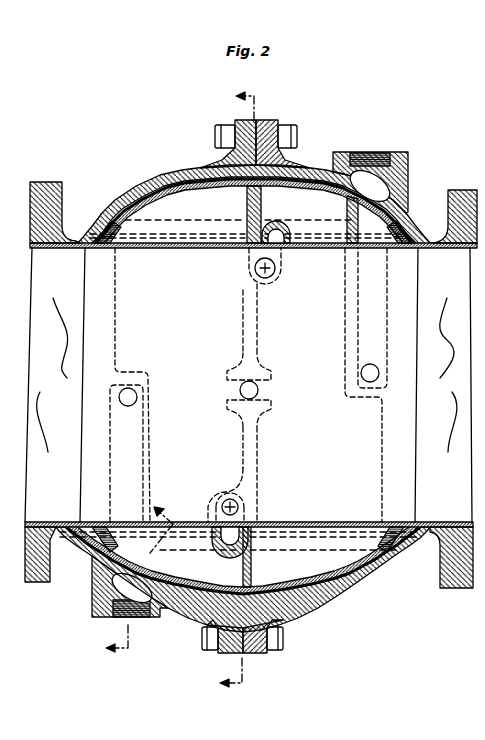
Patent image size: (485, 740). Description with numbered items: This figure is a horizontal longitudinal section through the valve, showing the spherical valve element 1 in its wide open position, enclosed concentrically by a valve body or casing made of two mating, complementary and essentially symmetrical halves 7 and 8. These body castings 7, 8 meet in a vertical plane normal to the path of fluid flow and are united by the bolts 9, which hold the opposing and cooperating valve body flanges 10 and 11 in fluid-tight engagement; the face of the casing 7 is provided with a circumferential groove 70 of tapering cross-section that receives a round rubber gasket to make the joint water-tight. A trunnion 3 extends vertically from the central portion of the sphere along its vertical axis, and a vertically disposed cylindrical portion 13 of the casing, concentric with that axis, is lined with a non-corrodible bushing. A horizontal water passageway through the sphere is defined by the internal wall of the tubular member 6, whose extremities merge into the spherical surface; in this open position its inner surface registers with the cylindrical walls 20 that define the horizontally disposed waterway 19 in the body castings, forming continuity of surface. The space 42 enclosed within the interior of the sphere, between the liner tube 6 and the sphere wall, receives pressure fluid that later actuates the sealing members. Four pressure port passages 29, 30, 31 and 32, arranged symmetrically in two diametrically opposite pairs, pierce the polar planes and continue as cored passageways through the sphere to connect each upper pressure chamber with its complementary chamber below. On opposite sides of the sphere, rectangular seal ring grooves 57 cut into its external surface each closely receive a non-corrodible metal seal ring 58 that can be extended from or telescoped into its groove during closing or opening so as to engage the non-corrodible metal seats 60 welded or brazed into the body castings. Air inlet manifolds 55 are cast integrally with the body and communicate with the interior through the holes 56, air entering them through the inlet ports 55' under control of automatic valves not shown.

The spherical valve element 1 is at (140, 192).
The upper trunnion 3 is at (245, 393).
The tubular member 6 is at (170, 250).
The valve body half 7 is at (162, 176).
The valve body half 8 is at (310, 163).
The bolts 9 is at (214, 136).
The valve body flange 10 is at (238, 122).
The valve body flange 11 is at (268, 122).
The cylindrical portion 13 is at (139, 583).
The waterway 19 is at (248, 385).
The cylindrical walls 20 is at (60, 250).
The pressure port passage 29 is at (278, 268).
The pressure port passage 30 is at (222, 507).
The pressure port passage 31 is at (127, 406).
The pressure port passage 32 is at (370, 363).
The space within sphere 42 is at (240, 388).
The air inlet manifold 55 is at (249, 386).
The inlet port 55' is at (251, 389).
The holes 56 is at (134, 594).
The seal ring groove 57 is at (86, 230).
The seal ring 58 is at (95, 250).
The seat 60 is at (77, 250).
The circumferential groove 70 is at (206, 628).